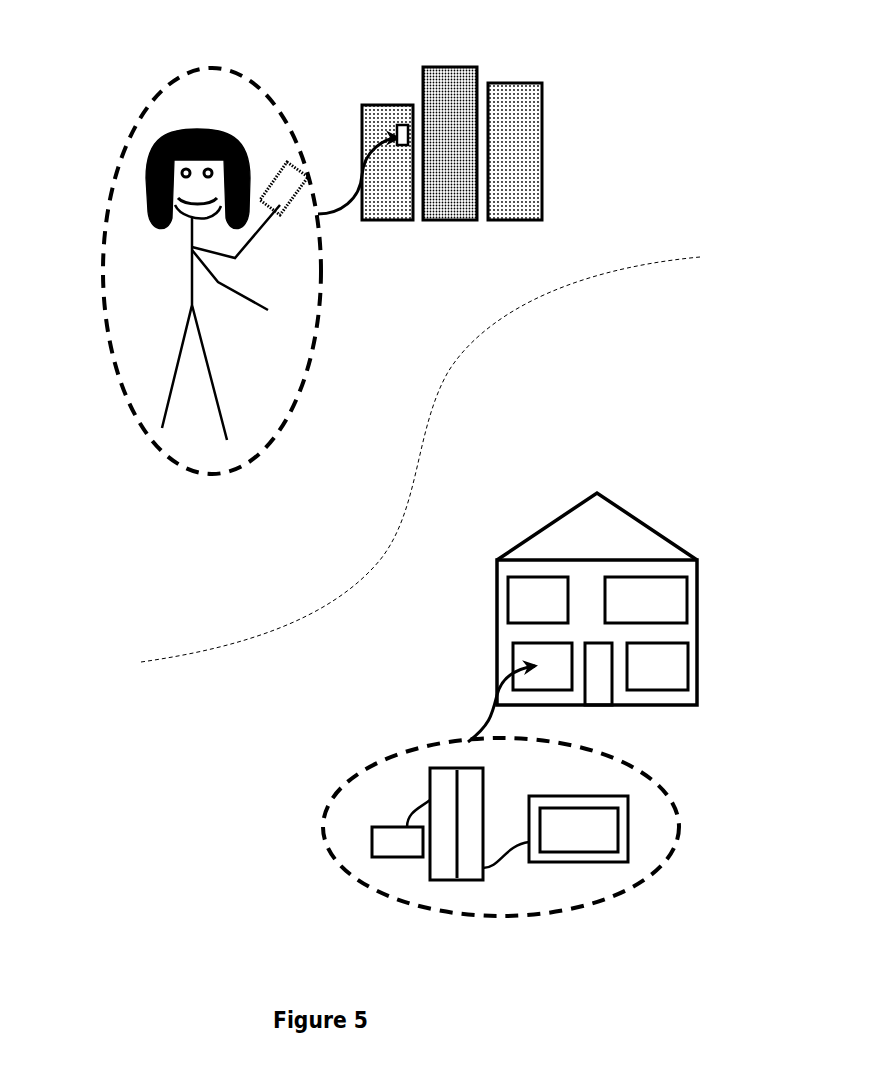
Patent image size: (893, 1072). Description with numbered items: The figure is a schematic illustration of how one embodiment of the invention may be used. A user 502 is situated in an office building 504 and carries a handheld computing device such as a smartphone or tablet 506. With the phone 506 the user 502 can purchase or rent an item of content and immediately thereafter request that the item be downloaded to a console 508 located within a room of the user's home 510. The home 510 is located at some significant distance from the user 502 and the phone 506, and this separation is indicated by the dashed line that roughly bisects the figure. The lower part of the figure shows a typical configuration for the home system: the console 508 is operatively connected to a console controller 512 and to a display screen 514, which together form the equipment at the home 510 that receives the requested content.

The user 502 is at (147, 183).
The office building 504 is at (400, 188).
The smartphone or tablet 506 is at (279, 214).
The console 508 is at (430, 787).
The user's home 510 is at (496, 596).
The console controller 512 is at (376, 857).
The display screen 514 is at (605, 863).